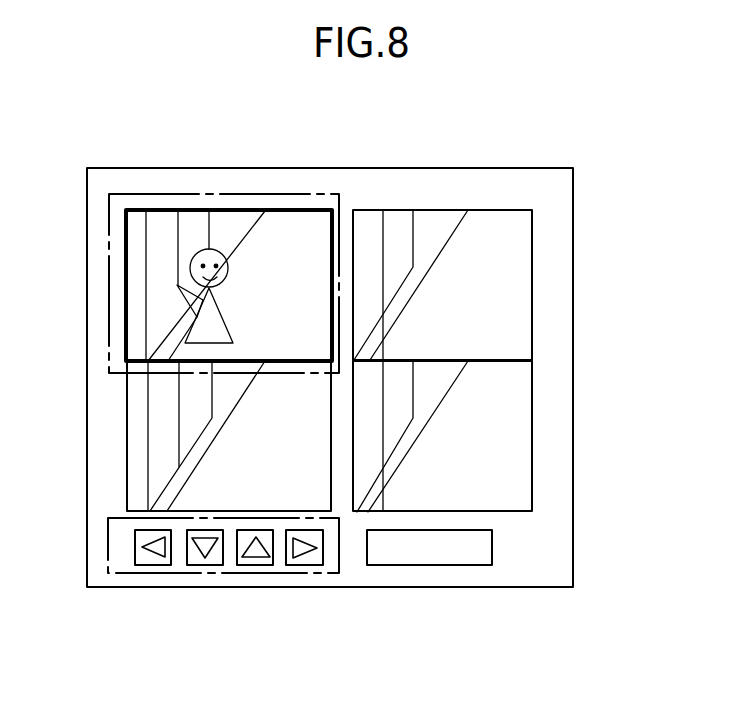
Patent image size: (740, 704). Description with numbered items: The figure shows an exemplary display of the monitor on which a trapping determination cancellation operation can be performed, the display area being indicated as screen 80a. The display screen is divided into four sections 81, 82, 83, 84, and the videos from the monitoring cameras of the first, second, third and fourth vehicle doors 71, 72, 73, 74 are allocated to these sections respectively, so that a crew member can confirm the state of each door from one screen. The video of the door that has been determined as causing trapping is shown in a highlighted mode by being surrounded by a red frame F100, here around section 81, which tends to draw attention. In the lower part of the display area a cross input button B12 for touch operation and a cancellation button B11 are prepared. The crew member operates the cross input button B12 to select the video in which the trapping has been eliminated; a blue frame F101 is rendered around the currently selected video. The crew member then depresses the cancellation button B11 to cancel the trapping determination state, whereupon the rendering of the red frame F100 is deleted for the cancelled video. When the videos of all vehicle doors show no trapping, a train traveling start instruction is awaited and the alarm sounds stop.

The display screen 80a is at (573, 168).
The first vehicle door 71 is at (188, 240).
The second vehicle door 72 is at (485, 239).
The third vehicle door 73 is at (180, 452).
The fourth vehicle door 74 is at (491, 449).
The divided section 81 is at (137, 290).
The divided section 82 is at (523, 288).
The divided section 83 is at (137, 467).
The divided section 84 is at (522, 467).
The red frame F100 is at (145, 208).
The blue frame F101 is at (282, 192).
The cancellation button B11 is at (493, 567).
The cross input button B12 is at (233, 572).